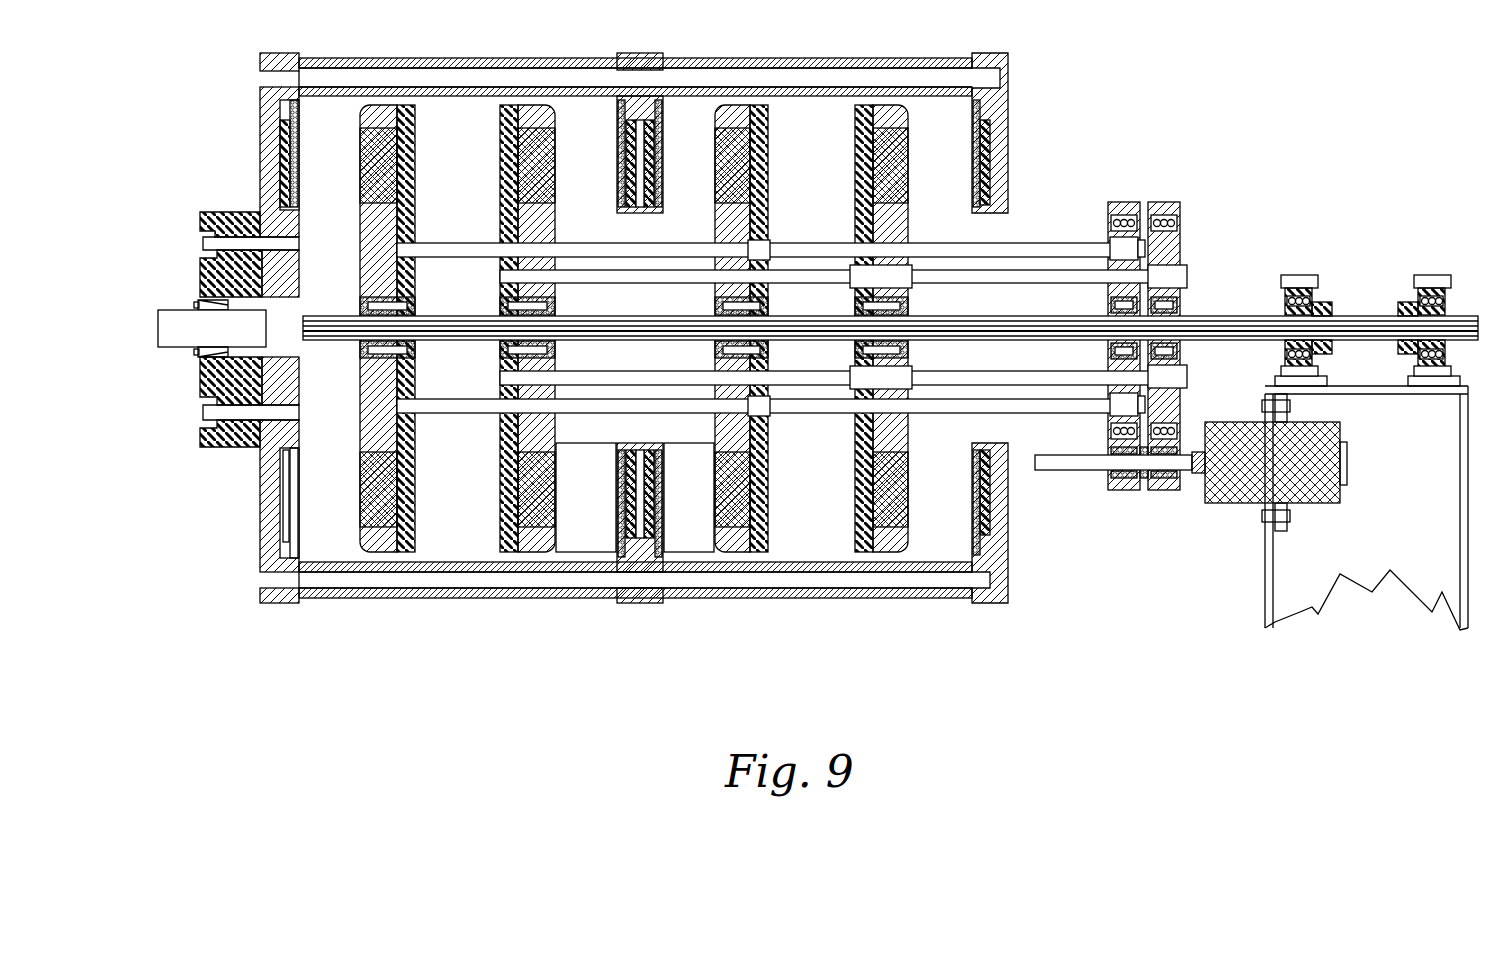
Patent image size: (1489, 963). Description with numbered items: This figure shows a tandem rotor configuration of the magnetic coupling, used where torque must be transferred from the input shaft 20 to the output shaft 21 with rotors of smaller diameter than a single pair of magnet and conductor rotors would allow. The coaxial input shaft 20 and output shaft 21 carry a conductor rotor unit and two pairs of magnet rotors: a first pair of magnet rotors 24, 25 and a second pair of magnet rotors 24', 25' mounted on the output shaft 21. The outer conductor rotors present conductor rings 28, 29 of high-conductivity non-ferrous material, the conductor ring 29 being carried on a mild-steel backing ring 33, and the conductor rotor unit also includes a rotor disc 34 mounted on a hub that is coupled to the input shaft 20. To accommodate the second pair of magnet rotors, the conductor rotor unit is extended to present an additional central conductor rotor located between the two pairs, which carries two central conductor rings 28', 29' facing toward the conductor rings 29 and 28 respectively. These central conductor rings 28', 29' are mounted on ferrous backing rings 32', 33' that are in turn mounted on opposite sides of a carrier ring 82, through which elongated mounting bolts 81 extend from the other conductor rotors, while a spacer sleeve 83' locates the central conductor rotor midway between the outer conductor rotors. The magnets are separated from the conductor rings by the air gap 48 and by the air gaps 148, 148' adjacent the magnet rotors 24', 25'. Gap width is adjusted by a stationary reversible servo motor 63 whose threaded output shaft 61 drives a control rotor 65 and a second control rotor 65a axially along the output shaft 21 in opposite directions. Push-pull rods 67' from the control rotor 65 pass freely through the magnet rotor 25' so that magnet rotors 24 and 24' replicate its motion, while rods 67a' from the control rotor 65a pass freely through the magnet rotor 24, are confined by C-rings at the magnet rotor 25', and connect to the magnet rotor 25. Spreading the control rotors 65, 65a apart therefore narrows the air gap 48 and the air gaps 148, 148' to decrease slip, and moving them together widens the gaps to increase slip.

The input shaft 20 is at (185, 347).
The output shaft 21 is at (1215, 314).
The magnet rotor 24 is at (801, 328).
The magnet rotor 24' is at (446, 328).
The magnet rotor 25 is at (417, 328).
The magnet rotor 25' is at (774, 328).
The conductor ring 28 is at (966, 133).
The central conductor ring 28' is at (596, 116).
The conductor ring 29 is at (318, 153).
The central conductor ring 29' is at (691, 116).
The ferrous backing ring 32' is at (604, 503).
The backing ring 33 is at (254, 163).
The ferrous backing ring 33' is at (680, 503).
The rotor disc 34 is at (262, 118).
The air gap 48 is at (944, 110).
The output shaft of servo motor 61 is at (1048, 470).
The servo motor 63 is at (1318, 497).
The control rotor 65 is at (1180, 240).
The second control rotor 65a is at (1110, 288).
The push-pull rods 67' is at (843, 327).
The push-pull rods 67a' is at (771, 310).
The elongated mounting bolts 81 is at (1000, 578).
The carrier ring 82 is at (636, 603).
The spacer sleeve 83' is at (635, 343).
The air gap 148 is at (563, 541).
The air gap 148' is at (728, 541).